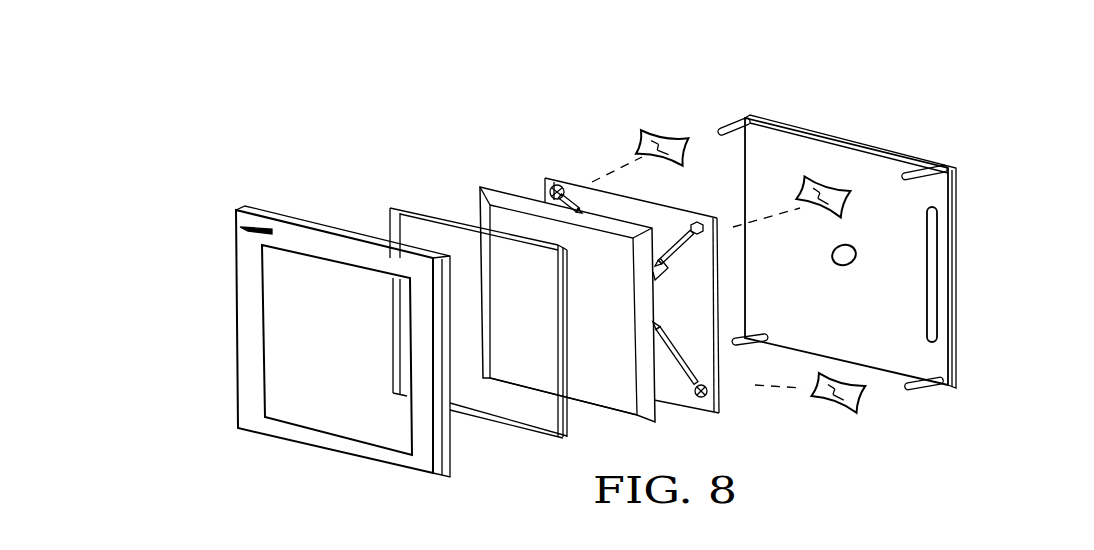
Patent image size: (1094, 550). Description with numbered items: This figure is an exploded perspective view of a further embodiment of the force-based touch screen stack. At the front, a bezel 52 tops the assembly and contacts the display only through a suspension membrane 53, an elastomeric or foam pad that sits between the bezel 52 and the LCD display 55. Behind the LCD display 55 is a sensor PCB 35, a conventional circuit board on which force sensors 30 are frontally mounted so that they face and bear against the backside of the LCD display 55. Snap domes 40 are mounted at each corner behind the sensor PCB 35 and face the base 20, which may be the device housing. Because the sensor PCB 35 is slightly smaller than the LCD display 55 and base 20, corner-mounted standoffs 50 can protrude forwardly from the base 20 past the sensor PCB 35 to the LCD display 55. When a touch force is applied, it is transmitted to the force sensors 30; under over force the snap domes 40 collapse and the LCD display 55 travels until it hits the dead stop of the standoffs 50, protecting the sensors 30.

The base 20 is at (780, 111).
The force sensor 30 is at (572, 200).
The sensor PCB 35 is at (544, 170).
The snap dome 40 is at (650, 134).
The corner-mounted standoff 50 is at (733, 126).
The bezel 52 is at (236, 223).
The suspension membrane 53 is at (386, 201).
The LCD display 55 is at (482, 183).